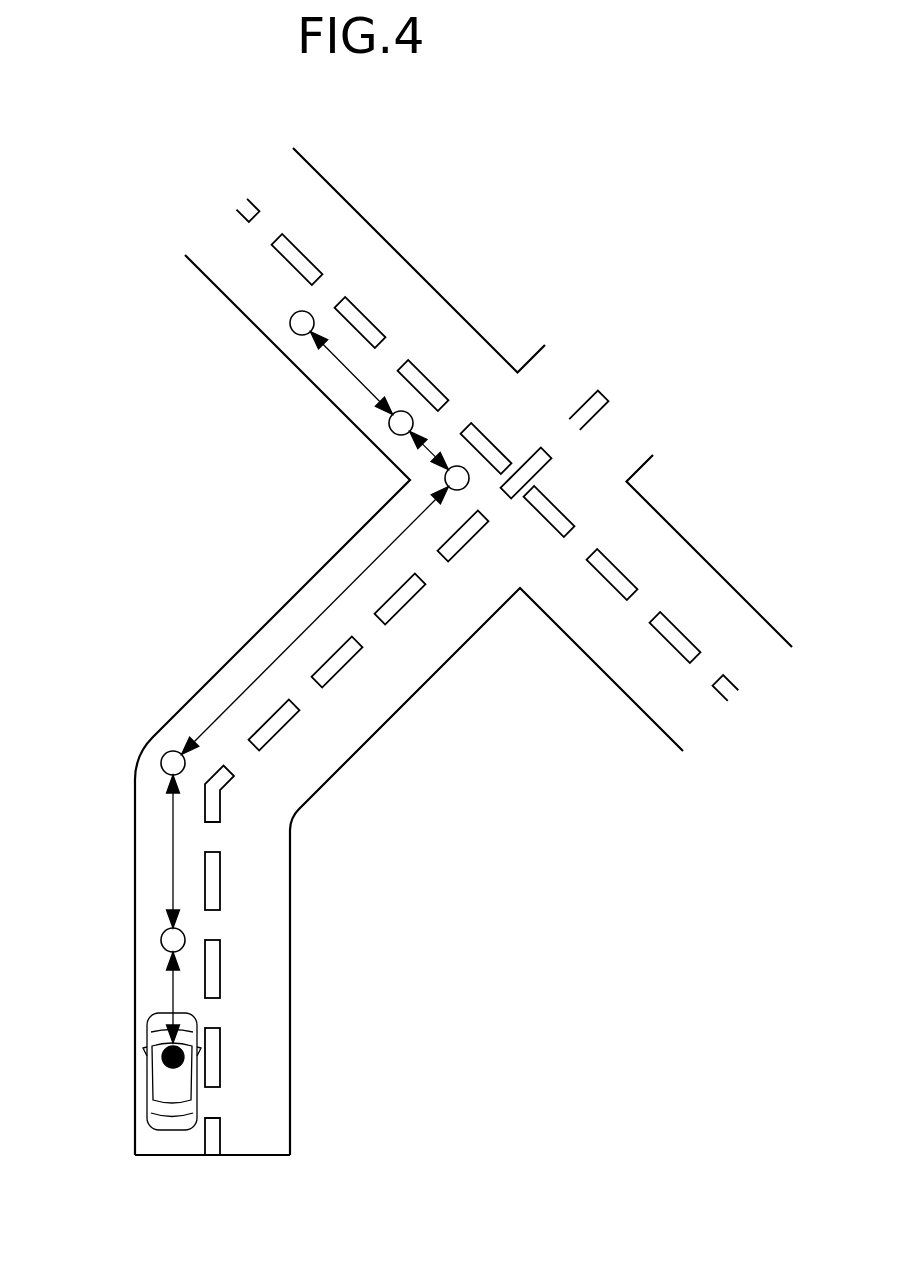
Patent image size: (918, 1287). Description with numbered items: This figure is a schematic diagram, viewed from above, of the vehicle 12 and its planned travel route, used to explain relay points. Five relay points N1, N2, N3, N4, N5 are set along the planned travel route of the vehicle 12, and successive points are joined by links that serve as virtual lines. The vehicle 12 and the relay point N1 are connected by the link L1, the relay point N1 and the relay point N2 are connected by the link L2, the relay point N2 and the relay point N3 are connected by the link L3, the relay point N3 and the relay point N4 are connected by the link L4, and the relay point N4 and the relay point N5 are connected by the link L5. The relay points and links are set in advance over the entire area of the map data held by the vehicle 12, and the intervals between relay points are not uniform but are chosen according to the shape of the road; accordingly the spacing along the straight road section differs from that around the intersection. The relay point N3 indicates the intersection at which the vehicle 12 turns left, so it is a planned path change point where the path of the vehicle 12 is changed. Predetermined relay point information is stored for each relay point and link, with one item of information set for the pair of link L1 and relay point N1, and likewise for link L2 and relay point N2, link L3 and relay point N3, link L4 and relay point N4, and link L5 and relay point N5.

The vehicle 12 is at (139, 1071).
The relay point N1 is at (131, 934).
The relay point N2 is at (135, 757).
The relay point N3 is at (403, 485).
The relay point N4 is at (369, 440).
The relay point N5 is at (275, 350).
The link L1 is at (173, 1004).
The link L2 is at (173, 842).
The link L3 is at (280, 657).
The link L4 is at (432, 448).
The link L5 is at (360, 378).